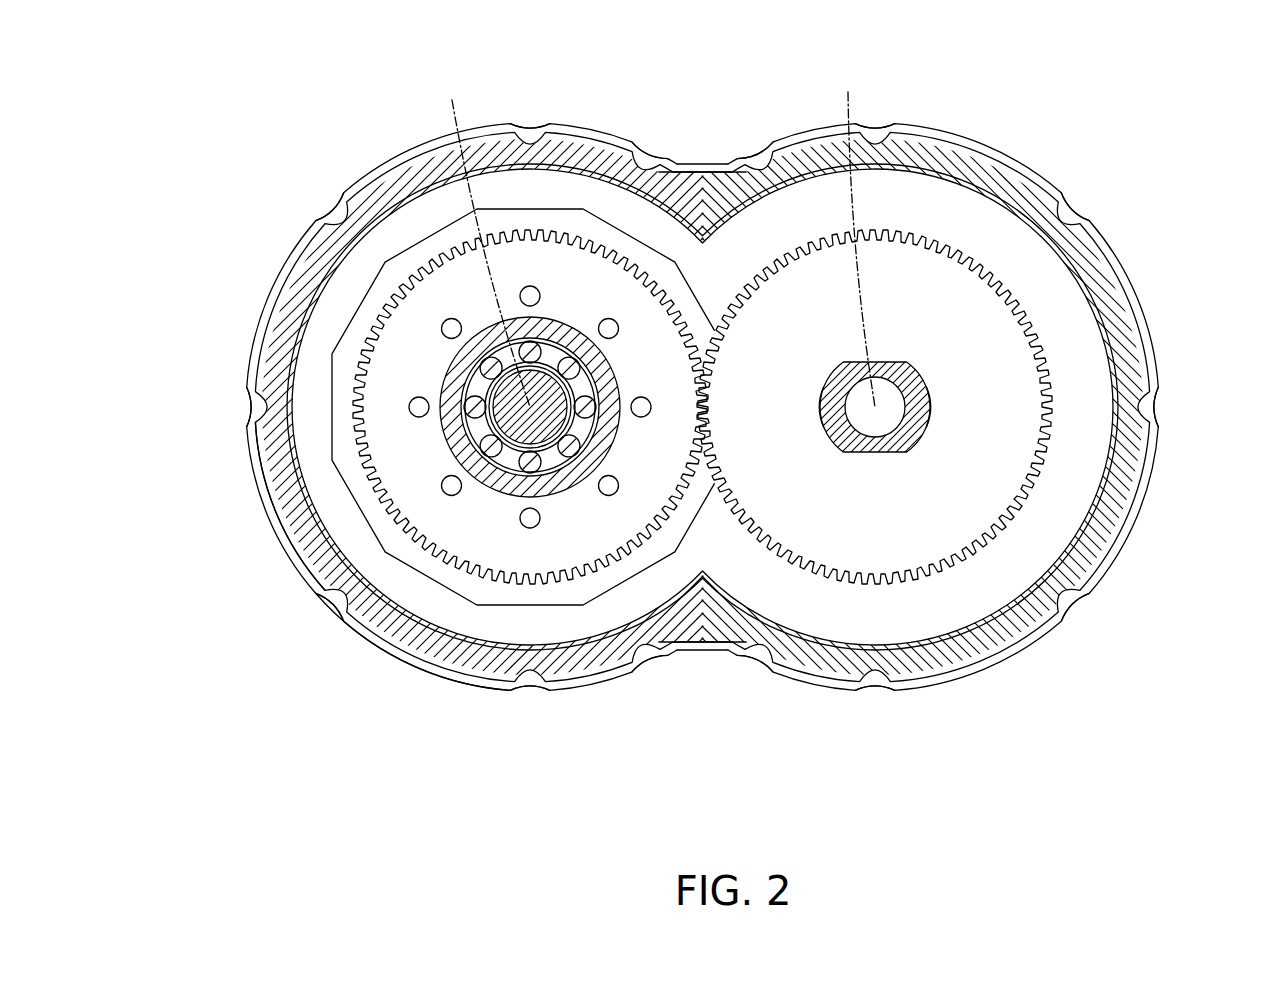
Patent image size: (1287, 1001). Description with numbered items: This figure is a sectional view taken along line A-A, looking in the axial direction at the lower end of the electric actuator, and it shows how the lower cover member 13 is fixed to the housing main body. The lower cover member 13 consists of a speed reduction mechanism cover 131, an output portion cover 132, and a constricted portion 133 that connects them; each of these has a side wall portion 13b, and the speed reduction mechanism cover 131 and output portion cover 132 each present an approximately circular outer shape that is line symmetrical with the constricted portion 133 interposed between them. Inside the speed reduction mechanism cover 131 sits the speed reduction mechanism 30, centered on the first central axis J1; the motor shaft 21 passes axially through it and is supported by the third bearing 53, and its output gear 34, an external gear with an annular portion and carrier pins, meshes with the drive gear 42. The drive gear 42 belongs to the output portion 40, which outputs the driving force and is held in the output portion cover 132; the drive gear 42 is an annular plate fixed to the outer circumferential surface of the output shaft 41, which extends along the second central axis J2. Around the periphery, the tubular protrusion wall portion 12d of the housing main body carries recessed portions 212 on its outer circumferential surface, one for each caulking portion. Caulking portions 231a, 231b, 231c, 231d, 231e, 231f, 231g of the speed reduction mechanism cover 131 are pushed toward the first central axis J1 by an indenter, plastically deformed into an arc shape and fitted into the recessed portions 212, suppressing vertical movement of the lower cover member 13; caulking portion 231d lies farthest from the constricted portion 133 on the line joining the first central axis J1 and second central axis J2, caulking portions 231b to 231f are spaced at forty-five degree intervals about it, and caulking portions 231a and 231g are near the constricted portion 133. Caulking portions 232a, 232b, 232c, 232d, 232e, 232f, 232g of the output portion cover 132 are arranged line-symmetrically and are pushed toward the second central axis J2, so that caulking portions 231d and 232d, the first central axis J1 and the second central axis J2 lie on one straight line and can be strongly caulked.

The lower cover member 13 is at (702, 375).
The speed reduction mechanism cover 131 is at (598, 128).
The output portion cover 132 is at (795, 128).
The constricted portion 133 is at (706, 164).
The protrusion wall portion 12d is at (285, 540).
The side wall portion 13b is at (413, 667).
The recessed portion 212 is at (338, 218).
The caulking portion 231a is at (648, 157).
The caulking portion 231b is at (530, 126).
The caulking portion 231c is at (330, 206).
The caulking portion 231d is at (250, 407).
The caulking portion 231e is at (328, 615).
The caulking portion 231f is at (531, 686).
The caulking portion 231g is at (650, 657).
The caulking portion 232a is at (756, 157).
The caulking portion 232b is at (876, 126).
The caulking portion 232c is at (1080, 213).
The caulking portion 232d is at (1162, 408).
The caulking portion 232e is at (1075, 613).
The caulking portion 232f is at (875, 690).
The caulking portion 232g is at (755, 657).
The speed reduction mechanism 30 is at (495, 415).
The output gear 34 is at (485, 550).
The motor shaft 21 is at (558, 472).
The third bearing 53 is at (500, 447).
The output portion 40 is at (898, 402).
The output shaft 41 is at (905, 440).
The drive gear 42 is at (982, 525).
The first central axis J1 is at (442, 226).
The second central axis J2 is at (851, 234).
The line A- A is at (702, 692).